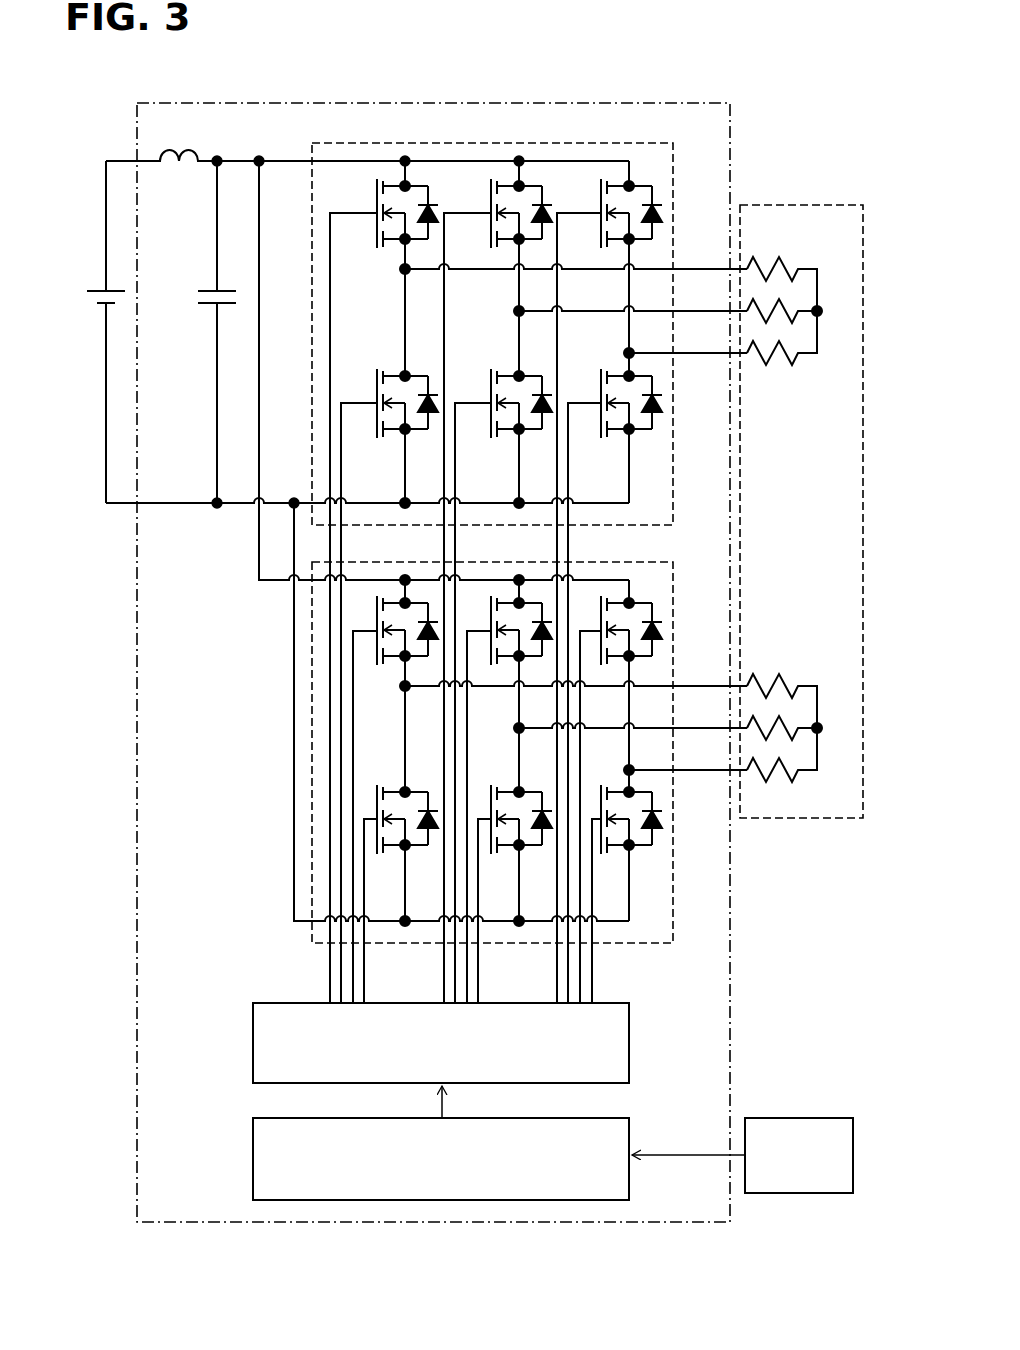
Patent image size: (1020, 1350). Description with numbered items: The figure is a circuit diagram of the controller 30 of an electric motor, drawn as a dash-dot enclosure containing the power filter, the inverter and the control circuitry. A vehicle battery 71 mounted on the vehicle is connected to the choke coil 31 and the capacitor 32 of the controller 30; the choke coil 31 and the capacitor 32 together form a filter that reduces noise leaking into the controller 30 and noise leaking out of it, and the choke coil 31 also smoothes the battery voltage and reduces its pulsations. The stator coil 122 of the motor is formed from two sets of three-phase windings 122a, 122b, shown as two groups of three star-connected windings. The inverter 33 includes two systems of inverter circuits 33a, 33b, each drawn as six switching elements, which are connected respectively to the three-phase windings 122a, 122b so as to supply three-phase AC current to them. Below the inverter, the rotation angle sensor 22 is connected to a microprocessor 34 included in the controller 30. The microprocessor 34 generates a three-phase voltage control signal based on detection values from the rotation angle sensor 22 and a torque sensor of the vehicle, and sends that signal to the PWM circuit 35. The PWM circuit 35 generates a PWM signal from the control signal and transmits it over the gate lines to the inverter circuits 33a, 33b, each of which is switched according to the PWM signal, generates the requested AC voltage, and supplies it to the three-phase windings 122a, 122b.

The controller 30 is at (228, 103).
The vehicle battery 71 is at (88, 252).
The choke coil 31 is at (174, 125).
The capacitor 32 is at (191, 324).
The inverter 33 is at (210, 560).
The inverter circuit 33a is at (312, 457).
The inverter circuit 33b is at (312, 762).
The stator coil 122 is at (800, 205).
The three-phase windings 122a is at (797, 388).
The three-phase windings 122b is at (791, 654).
The PWM circuit 35 is at (253, 1040).
The microprocessor 34 is at (253, 1155).
The rotation angle sensor 22 is at (812, 1118).